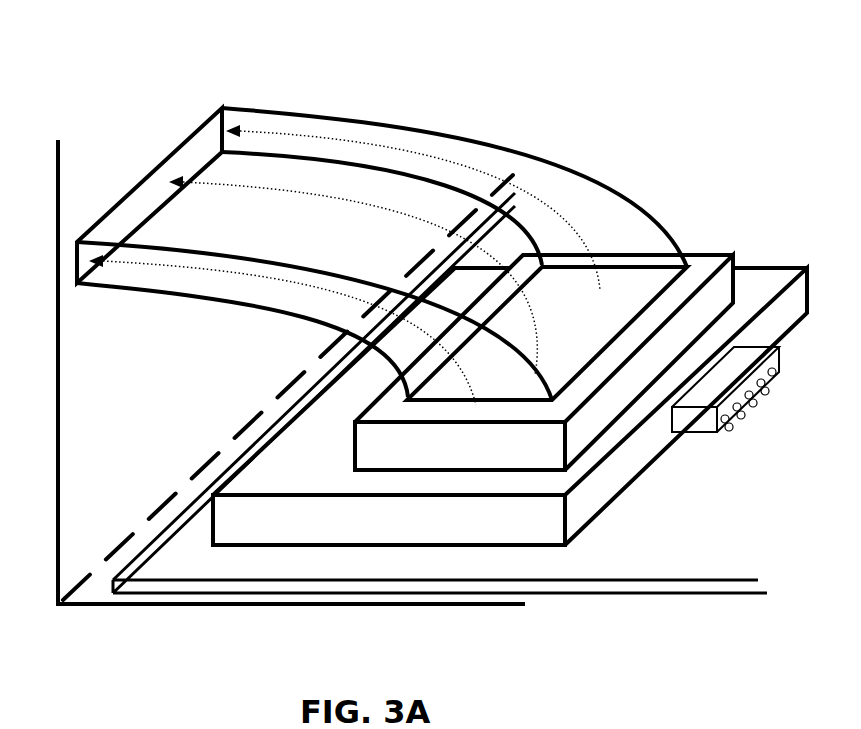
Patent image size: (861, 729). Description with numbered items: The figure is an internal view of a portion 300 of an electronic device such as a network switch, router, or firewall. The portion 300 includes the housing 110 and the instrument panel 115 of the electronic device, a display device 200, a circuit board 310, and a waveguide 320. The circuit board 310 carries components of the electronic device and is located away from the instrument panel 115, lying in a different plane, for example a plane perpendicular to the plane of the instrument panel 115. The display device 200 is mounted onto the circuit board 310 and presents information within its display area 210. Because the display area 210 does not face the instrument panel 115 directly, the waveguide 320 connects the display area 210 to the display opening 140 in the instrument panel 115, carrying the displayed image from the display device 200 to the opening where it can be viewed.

The portion 300 is at (112, 55).
The housing 110 is at (88, 616).
The instrument panel 115 is at (72, 390).
The display opening 140 is at (143, 168).
The display device 200 is at (287, 558).
The display area 210 is at (606, 363).
The circuit board 310 is at (352, 606).
The waveguide 320 is at (687, 263).